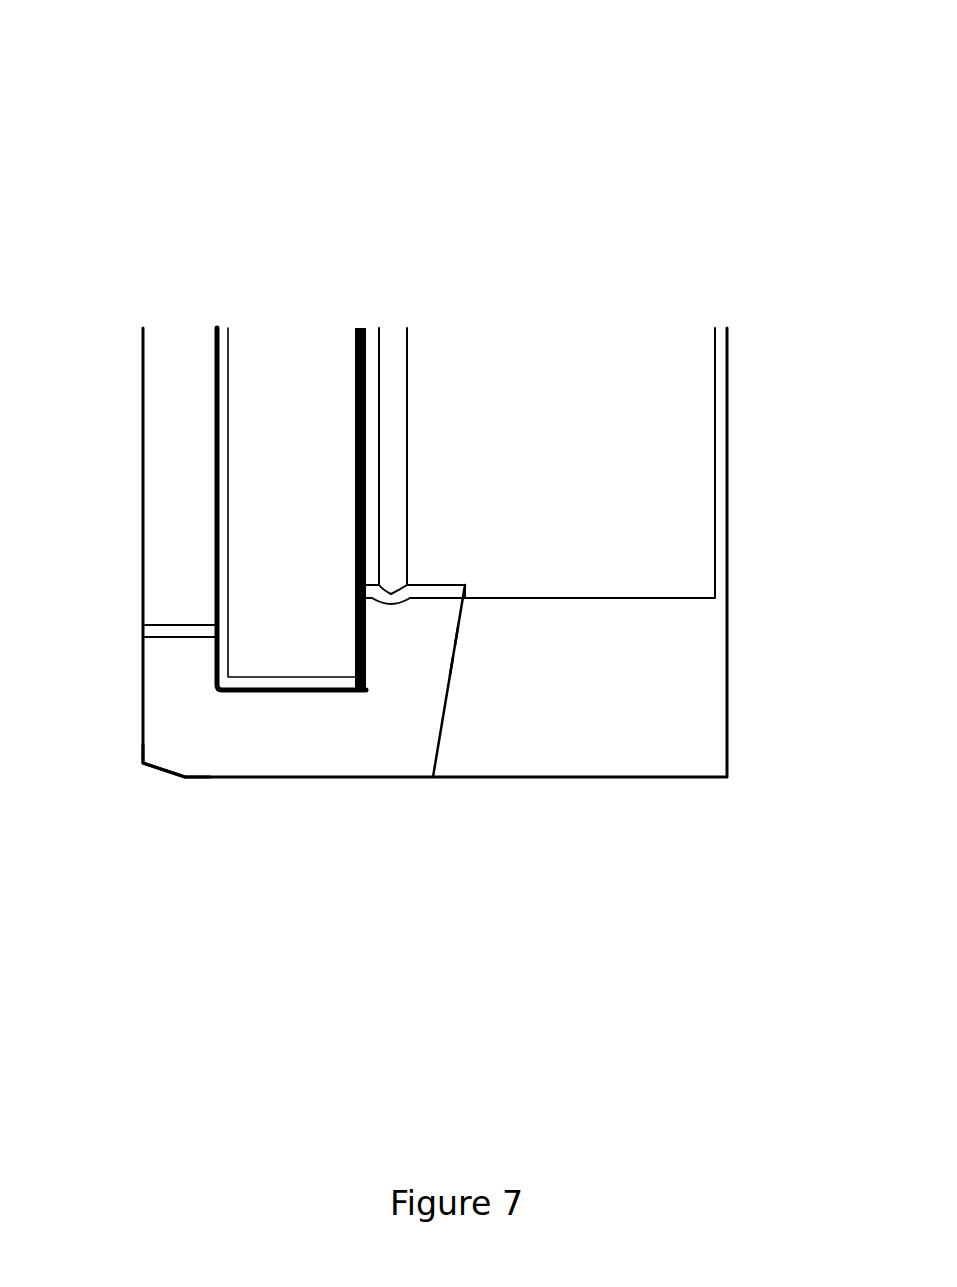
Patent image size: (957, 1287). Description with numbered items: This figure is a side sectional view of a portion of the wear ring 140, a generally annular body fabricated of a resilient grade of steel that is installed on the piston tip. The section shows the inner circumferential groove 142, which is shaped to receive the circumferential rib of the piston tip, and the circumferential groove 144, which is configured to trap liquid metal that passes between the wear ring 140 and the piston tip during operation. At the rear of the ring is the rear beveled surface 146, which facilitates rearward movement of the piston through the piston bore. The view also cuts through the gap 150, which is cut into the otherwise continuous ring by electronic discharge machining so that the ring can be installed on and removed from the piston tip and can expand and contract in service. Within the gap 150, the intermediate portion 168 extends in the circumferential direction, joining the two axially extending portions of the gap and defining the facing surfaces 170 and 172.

The wear ring 140 is at (790, 65).
The inner circumferential groove 142 is at (295, 345).
The circumferential groove 144 is at (392, 345).
The rear beveled surface 146 is at (156, 778).
The gap 150 is at (497, 845).
The intermediate portion 168 is at (433, 788).
The facing surface 170 is at (447, 641).
The facing surface 172 is at (465, 663).